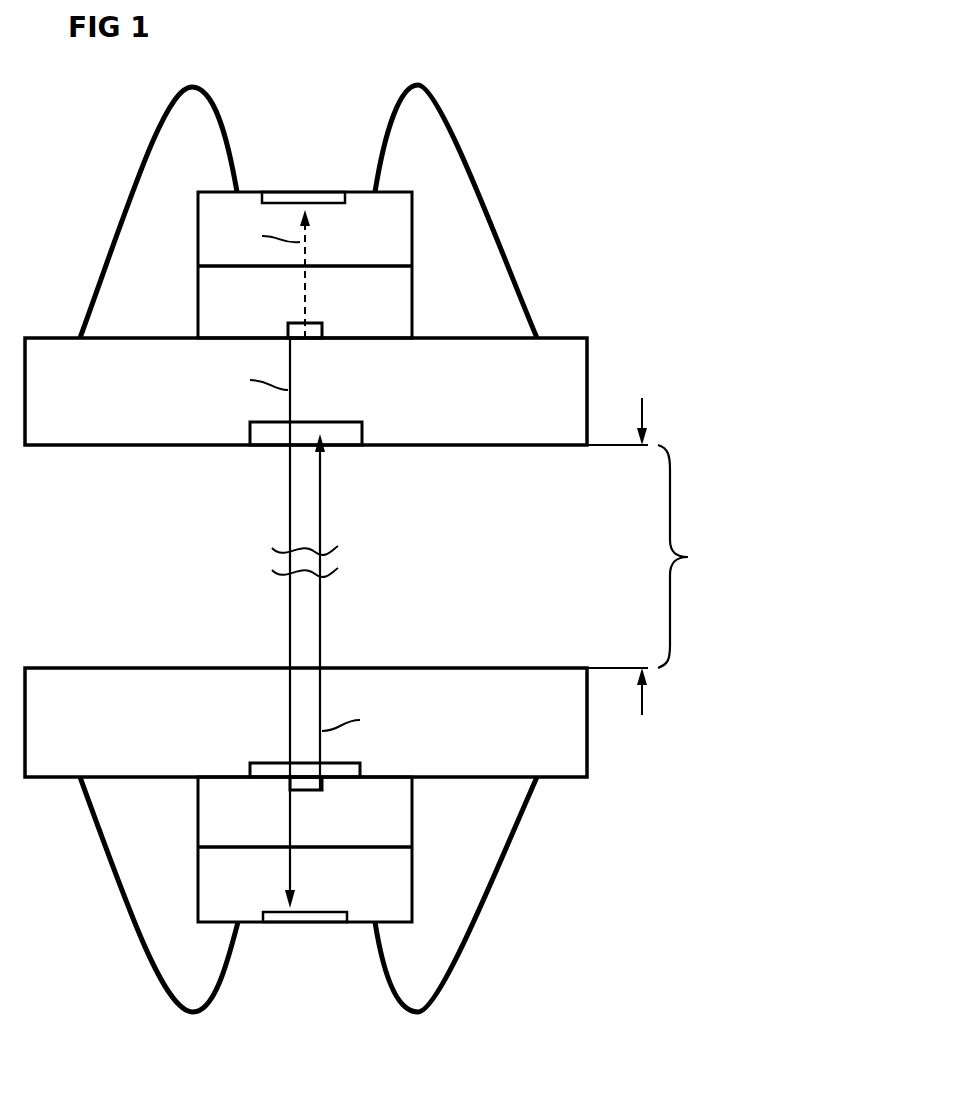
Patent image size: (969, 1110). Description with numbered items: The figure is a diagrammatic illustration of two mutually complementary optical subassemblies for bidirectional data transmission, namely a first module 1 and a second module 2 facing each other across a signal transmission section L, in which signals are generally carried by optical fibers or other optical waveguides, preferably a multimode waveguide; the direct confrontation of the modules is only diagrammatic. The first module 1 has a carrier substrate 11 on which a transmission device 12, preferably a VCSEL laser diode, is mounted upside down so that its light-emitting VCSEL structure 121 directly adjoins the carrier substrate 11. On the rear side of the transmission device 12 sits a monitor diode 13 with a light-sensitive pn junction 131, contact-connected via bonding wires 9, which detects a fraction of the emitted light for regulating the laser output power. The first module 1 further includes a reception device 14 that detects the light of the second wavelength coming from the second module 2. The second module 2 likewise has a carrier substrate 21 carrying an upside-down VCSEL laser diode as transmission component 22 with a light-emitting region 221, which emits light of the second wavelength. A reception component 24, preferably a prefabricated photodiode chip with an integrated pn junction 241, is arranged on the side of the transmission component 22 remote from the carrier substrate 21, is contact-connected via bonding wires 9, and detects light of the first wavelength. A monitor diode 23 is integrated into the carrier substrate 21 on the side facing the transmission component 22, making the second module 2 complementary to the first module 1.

The first module 1 is at (584, 225).
The second module 2 is at (585, 886).
The bonding wires 9 is at (528, 1078).
The carrier substrate 11 is at (587, 385).
The transmission device 12 is at (400, 320).
The monitor diode 13 is at (393, 249).
The reception device 14 is at (250, 433).
The VCSEL structure 121 is at (318, 327).
The light-sensitive pn junction 131 is at (305, 195).
The carrier substrate 21 is at (587, 720).
The transmission component 22 is at (395, 829).
The monitor diode 23 is at (250, 767).
The reception component 24 is at (403, 891).
The light-emitting region 221 is at (305, 791).
The integrated pn junction 241 is at (300, 923).
The signal transmission section L is at (745, 570).